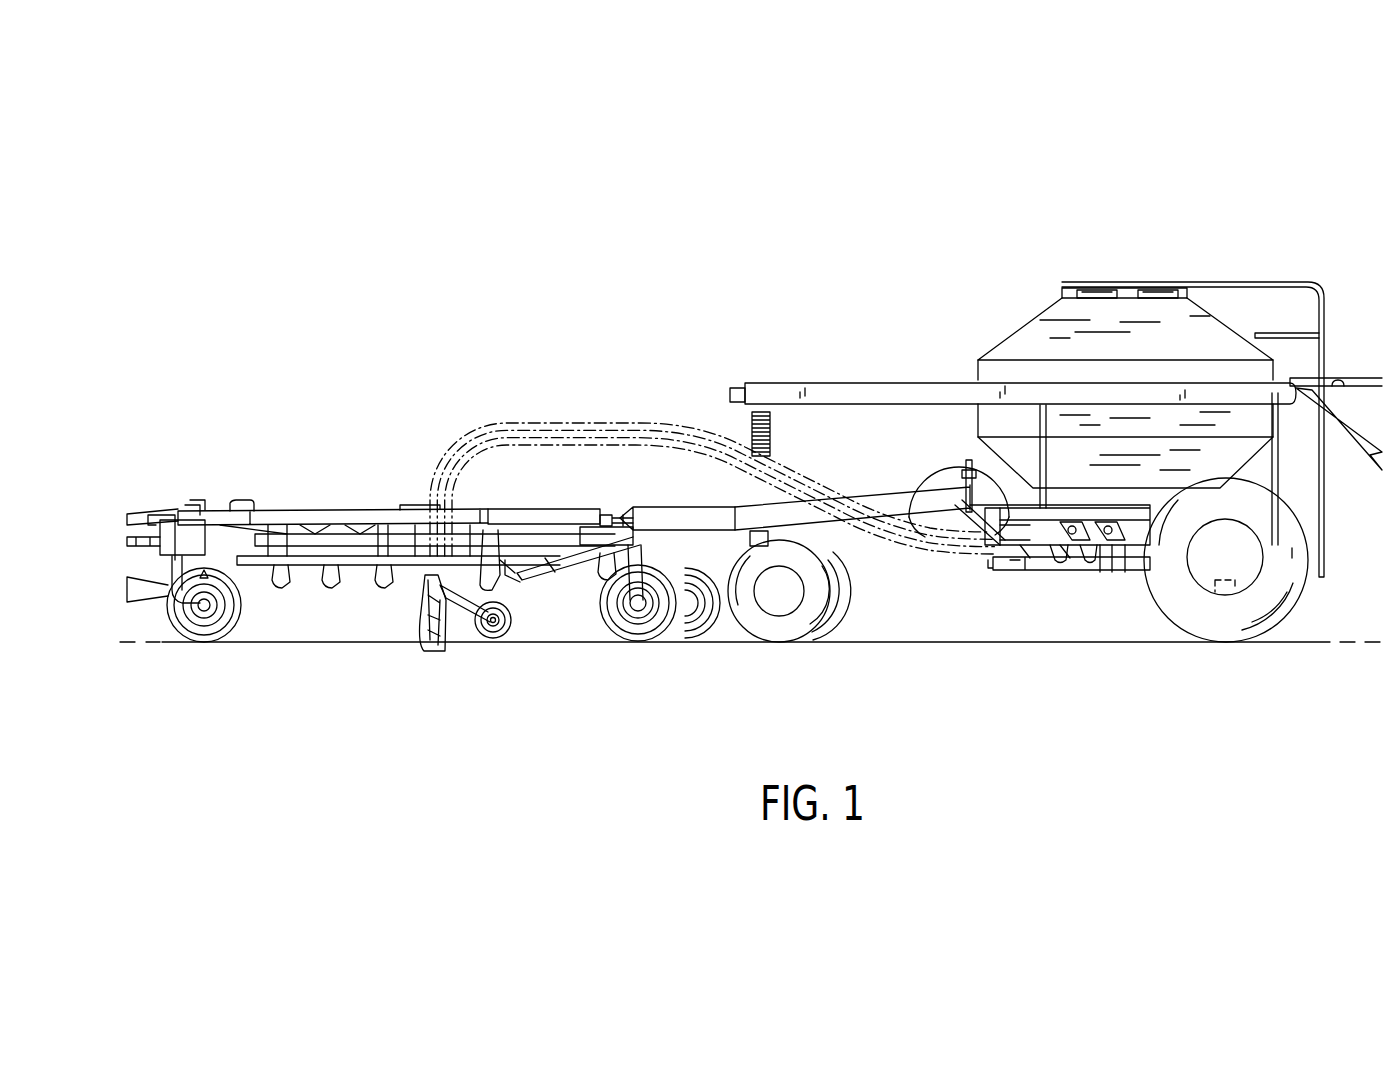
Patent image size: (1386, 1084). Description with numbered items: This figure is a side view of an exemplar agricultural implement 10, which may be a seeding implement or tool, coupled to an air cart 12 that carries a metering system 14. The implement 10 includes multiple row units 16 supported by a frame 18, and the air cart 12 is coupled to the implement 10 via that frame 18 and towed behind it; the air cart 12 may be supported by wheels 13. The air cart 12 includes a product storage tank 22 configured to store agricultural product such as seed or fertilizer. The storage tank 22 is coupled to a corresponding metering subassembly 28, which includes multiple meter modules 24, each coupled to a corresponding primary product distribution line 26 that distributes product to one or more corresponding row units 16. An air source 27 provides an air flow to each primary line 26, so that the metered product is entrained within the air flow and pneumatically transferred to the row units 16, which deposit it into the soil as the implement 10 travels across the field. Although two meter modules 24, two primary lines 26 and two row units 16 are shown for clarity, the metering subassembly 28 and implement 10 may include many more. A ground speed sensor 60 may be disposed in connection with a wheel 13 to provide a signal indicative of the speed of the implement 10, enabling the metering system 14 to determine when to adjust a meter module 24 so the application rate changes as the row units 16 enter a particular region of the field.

The agricultural implement 10 is at (562, 558).
The air cart 12 is at (1055, 440).
The wheels 13 is at (1240, 563).
The metering system 14 is at (1044, 577).
The row units 16 is at (412, 628).
The frame 18 is at (232, 510).
The product storage tank 22 is at (1048, 318).
The meter modules 24 is at (1118, 542).
The primary product distribution lines 26 is at (620, 432).
The air source 27 is at (925, 472).
The metering subassembly 28 is at (1040, 530).
The ground speed sensor 60 is at (1222, 590).